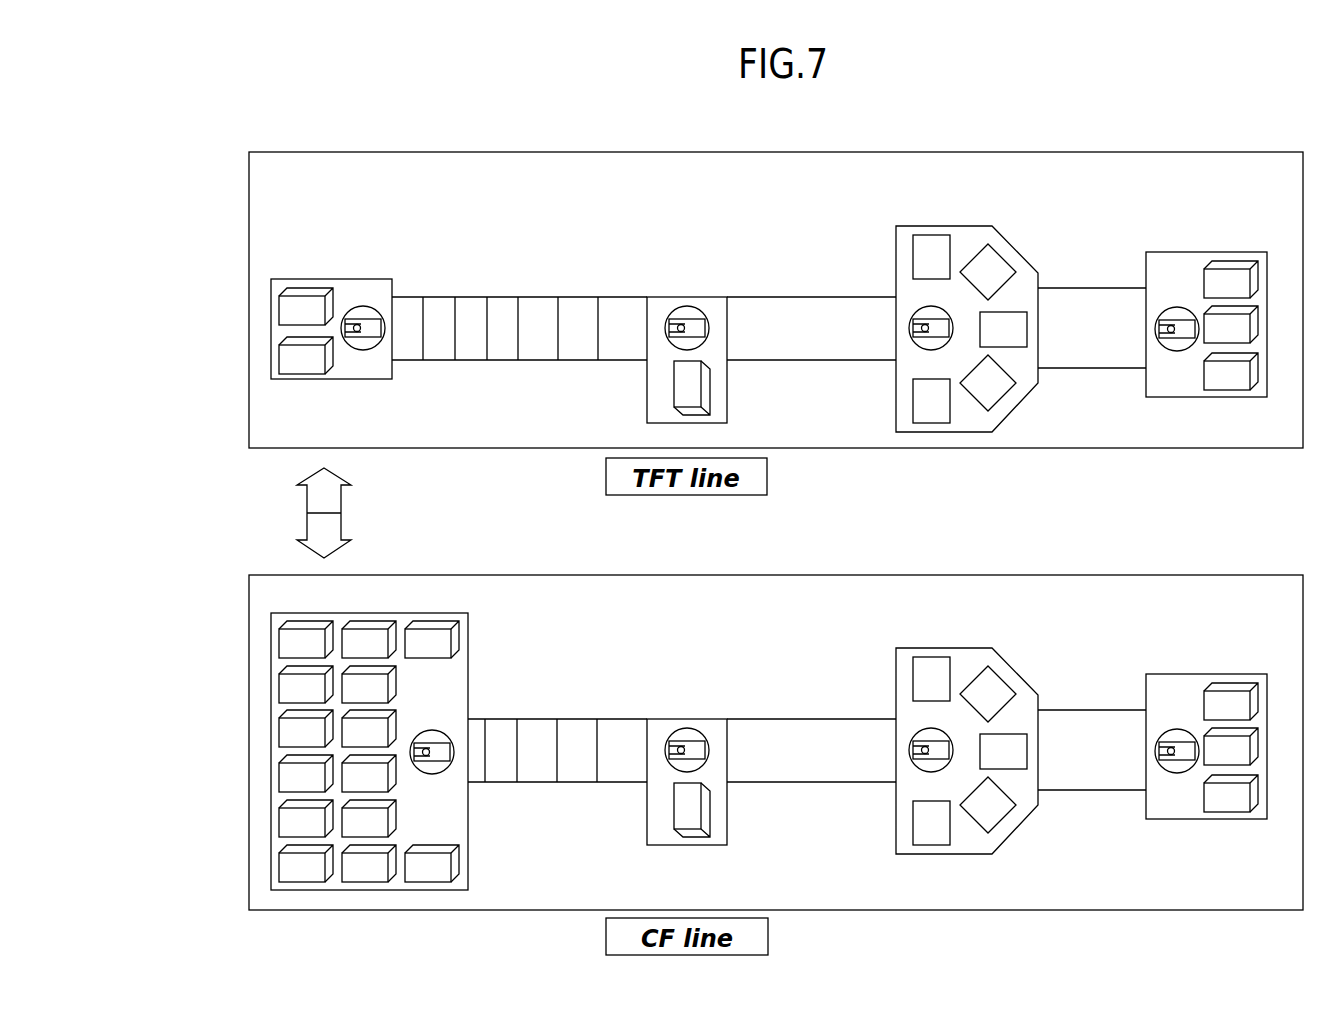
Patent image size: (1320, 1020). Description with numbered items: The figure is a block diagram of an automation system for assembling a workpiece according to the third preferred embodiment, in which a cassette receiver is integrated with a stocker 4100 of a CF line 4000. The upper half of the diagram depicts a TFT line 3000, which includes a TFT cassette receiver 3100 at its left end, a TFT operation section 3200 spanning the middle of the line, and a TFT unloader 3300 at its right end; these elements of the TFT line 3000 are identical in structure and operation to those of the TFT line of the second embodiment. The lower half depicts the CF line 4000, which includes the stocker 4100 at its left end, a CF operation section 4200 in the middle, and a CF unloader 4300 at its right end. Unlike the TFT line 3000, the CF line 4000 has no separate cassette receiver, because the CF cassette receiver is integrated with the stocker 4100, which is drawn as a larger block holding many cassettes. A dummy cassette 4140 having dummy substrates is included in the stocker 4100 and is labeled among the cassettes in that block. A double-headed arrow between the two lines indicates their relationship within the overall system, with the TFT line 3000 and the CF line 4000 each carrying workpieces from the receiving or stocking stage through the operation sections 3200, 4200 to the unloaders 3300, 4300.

The TFT line 3000 is at (249, 217).
The TFT cassette receiver 3100 is at (329, 279).
The TFT operation section 3200 is at (1135, 288).
The TFT unloader 3300 is at (1195, 252).
The CF line 4000 is at (249, 662).
The stocker 4100 is at (429, 751).
The dummy cassette 4140 is at (457, 638).
The CF operation section 4200 is at (1135, 710).
The CF unloader 4300 is at (1202, 675).